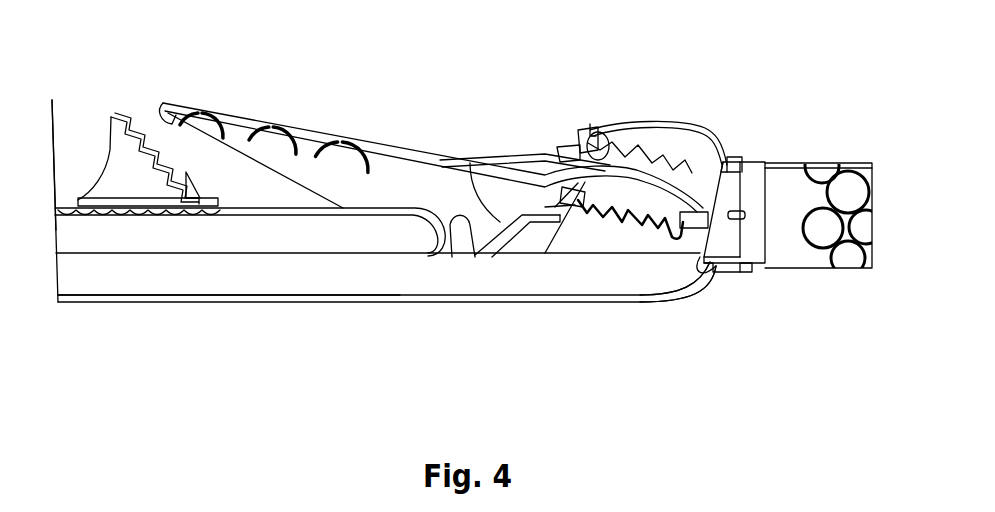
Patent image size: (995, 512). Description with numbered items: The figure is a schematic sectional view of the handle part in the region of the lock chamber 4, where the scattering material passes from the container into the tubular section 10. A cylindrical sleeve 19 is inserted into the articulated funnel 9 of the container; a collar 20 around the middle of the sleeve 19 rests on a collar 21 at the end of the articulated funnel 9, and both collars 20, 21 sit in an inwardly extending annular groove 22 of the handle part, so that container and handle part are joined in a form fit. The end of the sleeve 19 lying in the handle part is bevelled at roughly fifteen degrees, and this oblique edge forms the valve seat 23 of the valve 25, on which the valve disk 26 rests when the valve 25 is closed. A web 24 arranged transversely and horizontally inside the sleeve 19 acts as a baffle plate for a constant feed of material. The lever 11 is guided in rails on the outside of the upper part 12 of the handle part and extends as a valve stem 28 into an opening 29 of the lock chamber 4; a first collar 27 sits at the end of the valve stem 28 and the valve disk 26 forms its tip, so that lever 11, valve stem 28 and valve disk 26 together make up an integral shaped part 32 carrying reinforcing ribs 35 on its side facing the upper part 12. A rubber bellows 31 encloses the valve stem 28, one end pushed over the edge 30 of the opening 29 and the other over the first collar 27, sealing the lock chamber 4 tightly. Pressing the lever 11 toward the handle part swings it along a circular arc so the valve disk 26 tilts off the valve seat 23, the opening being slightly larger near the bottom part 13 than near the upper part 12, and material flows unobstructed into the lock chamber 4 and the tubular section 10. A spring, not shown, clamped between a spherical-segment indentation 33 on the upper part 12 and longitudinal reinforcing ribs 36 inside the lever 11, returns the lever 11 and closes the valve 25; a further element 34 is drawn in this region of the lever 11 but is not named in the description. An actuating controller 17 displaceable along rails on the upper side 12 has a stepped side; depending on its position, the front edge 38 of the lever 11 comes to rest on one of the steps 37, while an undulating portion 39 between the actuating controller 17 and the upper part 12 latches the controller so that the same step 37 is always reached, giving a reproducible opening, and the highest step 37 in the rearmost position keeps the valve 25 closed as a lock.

The lock chamber 4 is at (590, 237).
The articulated funnel 9 is at (818, 250).
The tubular section 10 is at (322, 288).
The lever 11 is at (297, 127).
The upper part 12 is at (52, 100).
The bottom part 13 is at (158, 287).
The actuating controller 17 is at (136, 130).
The sleeve 19 is at (763, 168).
The collar 20 is at (730, 270).
The collar 21 is at (745, 272).
The annular groove 22 is at (745, 160).
The valve seat 23 is at (637, 293).
The web 24 is at (745, 214).
The valve 25 is at (713, 190).
The valve disk 26 is at (725, 178).
The first collar 27 is at (713, 162).
The valve stem 28 is at (612, 132).
The opening 29 is at (587, 150).
The edge 30 is at (590, 135).
The rubber bellows 31 is at (620, 163).
The integral shaped part 32 is at (398, 173).
The indentation 33 is at (477, 205).
The catch 34 is at (480, 207).
The reinforcing ribs 35 is at (258, 122).
The reinforcing ribs 36 is at (485, 187).
The steps 37 is at (172, 172).
The front edge 38 is at (166, 100).
The undulating portion 39 is at (100, 215).